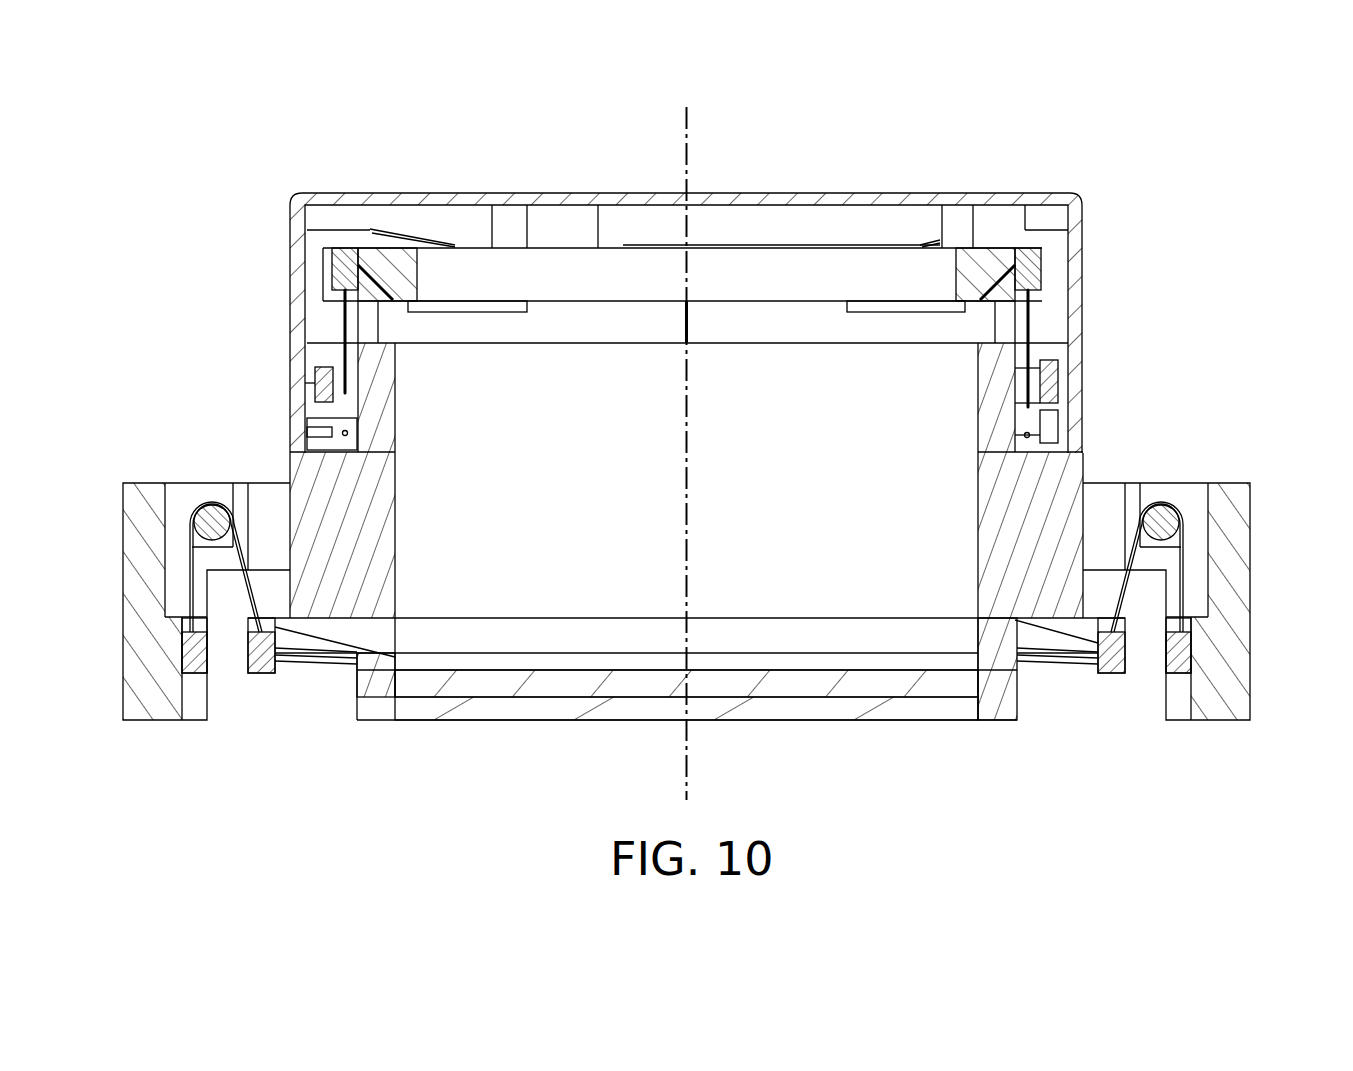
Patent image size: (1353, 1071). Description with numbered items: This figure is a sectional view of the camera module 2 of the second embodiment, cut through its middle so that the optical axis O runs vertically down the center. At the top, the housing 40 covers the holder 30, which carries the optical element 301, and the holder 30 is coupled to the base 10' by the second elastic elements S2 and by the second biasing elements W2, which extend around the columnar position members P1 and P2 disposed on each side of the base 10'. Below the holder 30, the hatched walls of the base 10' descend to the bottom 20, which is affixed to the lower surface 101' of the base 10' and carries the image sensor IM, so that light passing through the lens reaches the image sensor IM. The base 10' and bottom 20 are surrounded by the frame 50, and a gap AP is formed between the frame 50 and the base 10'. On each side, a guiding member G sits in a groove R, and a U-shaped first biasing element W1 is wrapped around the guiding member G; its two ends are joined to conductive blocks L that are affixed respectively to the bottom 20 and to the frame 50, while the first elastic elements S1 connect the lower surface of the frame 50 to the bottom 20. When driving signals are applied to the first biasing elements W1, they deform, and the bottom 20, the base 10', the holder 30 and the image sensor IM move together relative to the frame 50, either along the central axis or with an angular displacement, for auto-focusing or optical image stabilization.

The camera module 2 is at (75, 101).
The optical axis O is at (687, 433).
The housing 40 is at (340, 200).
The second elastic element S2 is at (405, 230).
The second biasing element W2 is at (686, 327).
The optical element 301 is at (808, 275).
The holder 30 is at (990, 245).
The conductive block L is at (343, 273).
The position member P1 is at (318, 385).
The position member P2 is at (1052, 420).
The groove R is at (208, 497).
The guiding member G is at (192, 528).
The first biasing element W1 is at (190, 565).
The frame 50 is at (150, 620).
The first elastic element S1 is at (320, 672).
The base 10' is at (686, 570).
The bottom 20 is at (432, 705).
The image sensor IM is at (545, 680).
The lower surface 101' is at (993, 707).
The gap AP is at (1105, 500).